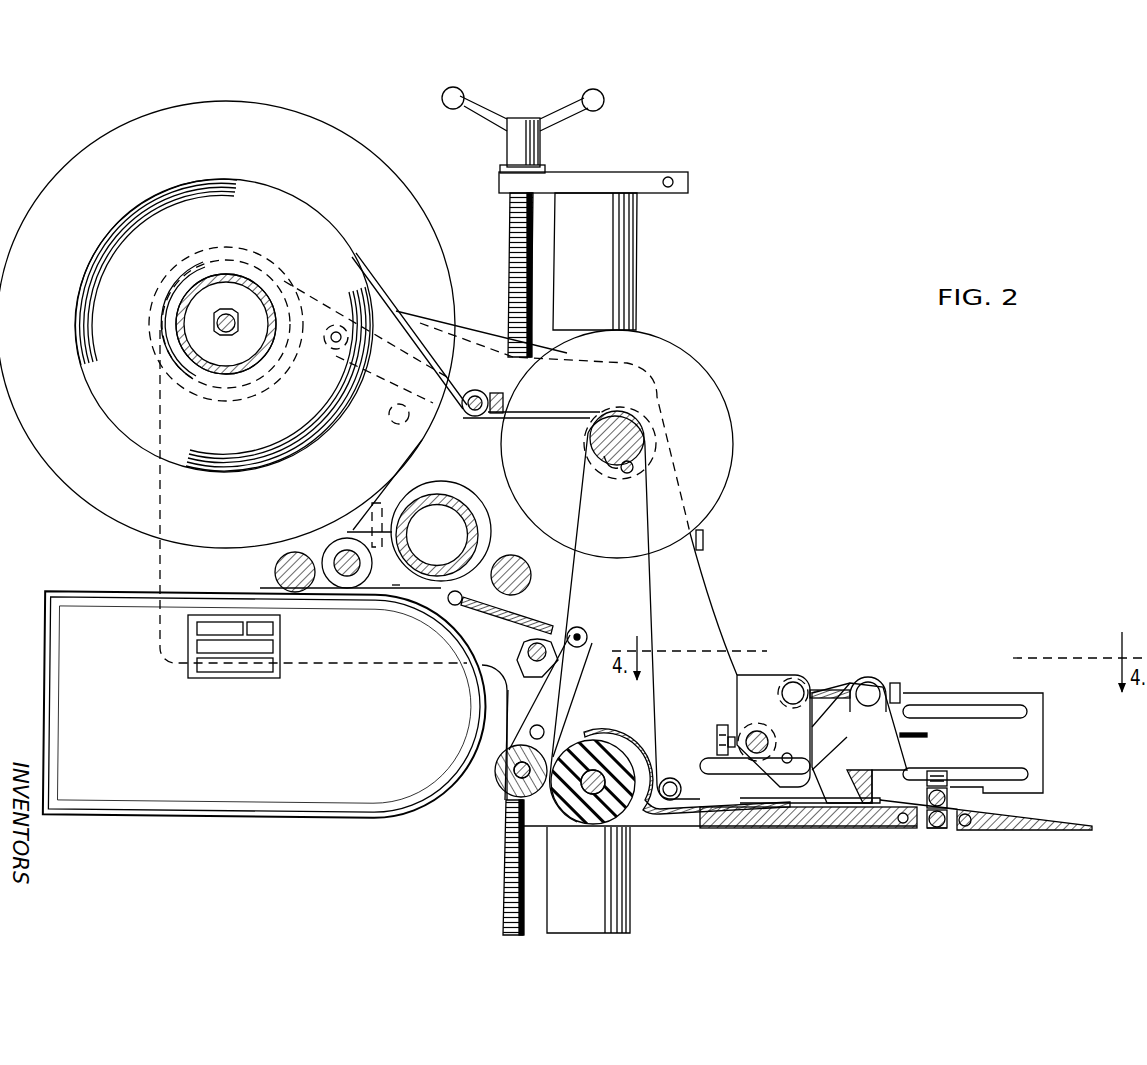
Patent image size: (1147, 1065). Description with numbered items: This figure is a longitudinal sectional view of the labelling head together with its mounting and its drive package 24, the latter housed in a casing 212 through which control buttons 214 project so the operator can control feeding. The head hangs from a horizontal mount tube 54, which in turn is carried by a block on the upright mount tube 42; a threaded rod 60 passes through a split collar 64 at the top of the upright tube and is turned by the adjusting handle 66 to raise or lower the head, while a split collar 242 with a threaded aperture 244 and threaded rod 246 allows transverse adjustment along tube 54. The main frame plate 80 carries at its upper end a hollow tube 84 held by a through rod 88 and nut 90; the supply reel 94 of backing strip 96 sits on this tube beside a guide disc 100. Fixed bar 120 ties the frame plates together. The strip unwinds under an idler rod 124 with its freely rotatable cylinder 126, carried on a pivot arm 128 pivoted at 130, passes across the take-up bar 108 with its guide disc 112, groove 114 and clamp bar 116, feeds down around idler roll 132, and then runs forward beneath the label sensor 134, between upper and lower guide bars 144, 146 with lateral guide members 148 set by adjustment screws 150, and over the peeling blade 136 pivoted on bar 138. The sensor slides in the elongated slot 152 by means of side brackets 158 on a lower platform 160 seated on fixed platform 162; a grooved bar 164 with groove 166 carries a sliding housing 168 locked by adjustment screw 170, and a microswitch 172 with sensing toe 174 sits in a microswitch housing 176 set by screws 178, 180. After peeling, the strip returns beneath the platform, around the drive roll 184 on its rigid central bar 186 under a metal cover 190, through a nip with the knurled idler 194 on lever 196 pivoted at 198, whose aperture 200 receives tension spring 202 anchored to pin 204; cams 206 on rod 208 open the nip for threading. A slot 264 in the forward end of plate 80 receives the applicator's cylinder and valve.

The drive package 24 is at (85, 717).
The upright mount tube 42 is at (612, 240).
The horizontal mount tube 54 is at (449, 500).
The threaded rod 60 is at (512, 228).
The split collar 64 is at (596, 176).
The adjusting handle 66 is at (523, 128).
The main frame plate 80 is at (690, 620).
The hollow tube 84 is at (177, 331).
The through rod 88 is at (222, 310).
The nut 90 is at (239, 320).
The supply reel 94 is at (91, 337).
The backing strip 96 is at (672, 828).
The guide disc 100 is at (60, 174).
The take-up bar 108 is at (641, 428).
The guide disc 112 is at (706, 376).
The axially extending groove 114 is at (606, 462).
The clamp bar 116 is at (627, 474).
The fixed bar 120 is at (528, 569).
The idler rod 124 is at (481, 395).
The freely rotatable cylinder 126 is at (505, 401).
The pivot arm 128 is at (462, 383).
The pivot 130 is at (334, 350).
The idler roll 132 is at (671, 778).
The label sensor 134 is at (864, 655).
The peeling blade 136 is at (1012, 829).
The bar 138 is at (969, 826).
The upper guide bar 144 is at (947, 801).
The lower guide bar 146 is at (935, 830).
The lateral guide member 148 is at (945, 831).
The adjustment screw 150 is at (941, 771).
The elongated slot 152 is at (1030, 769).
The side bracket 158 is at (750, 776).
The lower platform 160 is at (836, 804).
The platform 162 is at (760, 830).
The bar 164 is at (748, 734).
The groove 166 is at (757, 730).
The housing 168 is at (793, 681).
The adjustment screw 170 is at (717, 735).
The microswitch 172 is at (928, 741).
The sensing toe 174 is at (858, 792).
The microswitch housing 176 is at (892, 718).
The adjustment screw 178 is at (830, 689).
The adjustment screw 180 is at (878, 682).
The drive roll 184 is at (620, 812).
The rigid central bar 186 is at (588, 795).
The metal cover 190 is at (598, 731).
The knurled idler 194 is at (502, 777).
The lever 196 is at (590, 645).
The pivot 198 is at (529, 732).
The aperture 200 is at (580, 627).
The tension spring 202 is at (512, 614).
The pin 204 is at (452, 605).
The cam 206 is at (525, 659).
The rod 208 is at (481, 678).
The housing 212 is at (287, 760).
The control buttons 214 is at (233, 674).
The split collar 242 is at (398, 588).
The threaded aperture 244 is at (338, 547).
The threaded rod 246 is at (349, 578).
The slot 264 is at (990, 705).